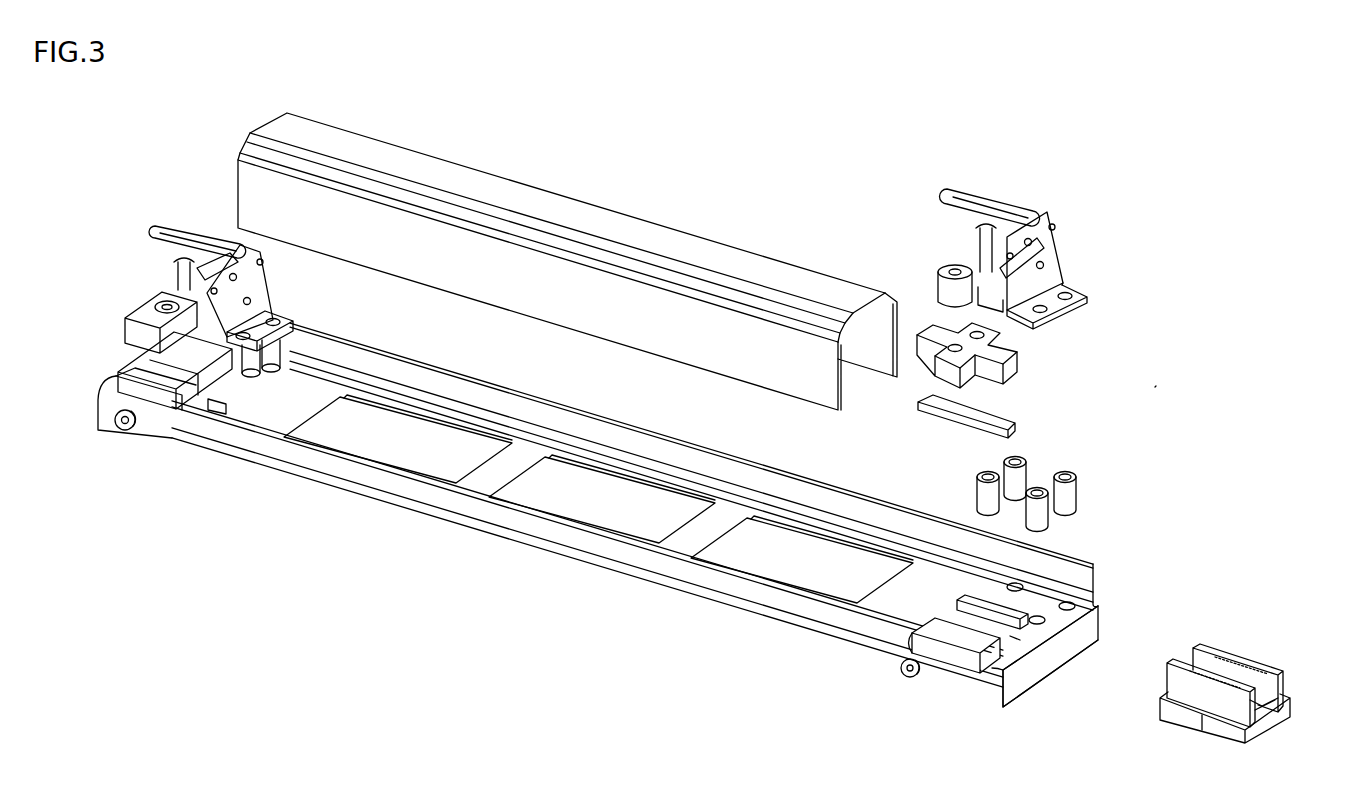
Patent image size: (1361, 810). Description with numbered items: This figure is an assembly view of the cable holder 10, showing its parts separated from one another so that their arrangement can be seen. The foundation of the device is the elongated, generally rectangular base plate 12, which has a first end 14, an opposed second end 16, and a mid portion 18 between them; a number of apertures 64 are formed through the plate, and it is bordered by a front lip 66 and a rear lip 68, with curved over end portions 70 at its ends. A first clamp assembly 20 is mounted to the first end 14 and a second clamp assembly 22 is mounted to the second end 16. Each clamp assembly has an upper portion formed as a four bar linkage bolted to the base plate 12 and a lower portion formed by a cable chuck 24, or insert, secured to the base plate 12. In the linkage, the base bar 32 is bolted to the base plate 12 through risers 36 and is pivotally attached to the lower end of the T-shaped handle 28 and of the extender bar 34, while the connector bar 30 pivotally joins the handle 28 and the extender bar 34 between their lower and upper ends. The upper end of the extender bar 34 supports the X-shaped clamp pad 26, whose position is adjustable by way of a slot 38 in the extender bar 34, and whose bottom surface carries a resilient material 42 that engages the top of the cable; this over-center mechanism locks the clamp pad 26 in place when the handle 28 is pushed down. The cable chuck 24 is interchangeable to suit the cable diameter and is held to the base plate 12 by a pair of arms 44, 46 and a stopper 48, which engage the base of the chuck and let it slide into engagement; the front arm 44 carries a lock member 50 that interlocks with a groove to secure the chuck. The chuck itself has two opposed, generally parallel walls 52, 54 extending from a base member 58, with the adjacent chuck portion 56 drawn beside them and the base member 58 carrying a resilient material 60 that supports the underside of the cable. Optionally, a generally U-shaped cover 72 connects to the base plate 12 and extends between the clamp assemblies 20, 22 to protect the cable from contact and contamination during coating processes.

The cable holder 10 is at (1155, 387).
The base plate 12 is at (318, 393).
The first end 14 is at (97, 430).
The second end 16 is at (998, 708).
The mid portion 18 is at (490, 532).
The first clamp assembly 20 is at (612, 338).
The second clamp assembly 22 is at (1100, 277).
The cable chuck 24 is at (733, 559).
The clamp pad 26 is at (132, 320).
The T-shaped handle 28 is at (170, 228).
The connector bar 30 is at (1033, 230).
The base bar 32 is at (1062, 247).
The extender bar 34 is at (937, 297).
The risers 36 is at (278, 352).
The slot 38 is at (972, 258).
The resilient material 42 is at (1010, 420).
The front arm 44 is at (960, 672).
The arm 46 is at (1003, 610).
The stopper 48 is at (220, 408).
The lock member 50 is at (123, 433).
The wall 52 is at (1203, 727).
The wall 54 is at (1285, 688).
The front jaw plate 56 is at (1163, 680).
The base member 58 is at (1273, 727).
The resilient material 60 is at (1012, 640).
The apertures 64 is at (386, 452).
The front lip 66 is at (400, 487).
The rear lip 68 is at (478, 380).
The curved over end portions 70 is at (1090, 622).
The cover 72 is at (670, 225).